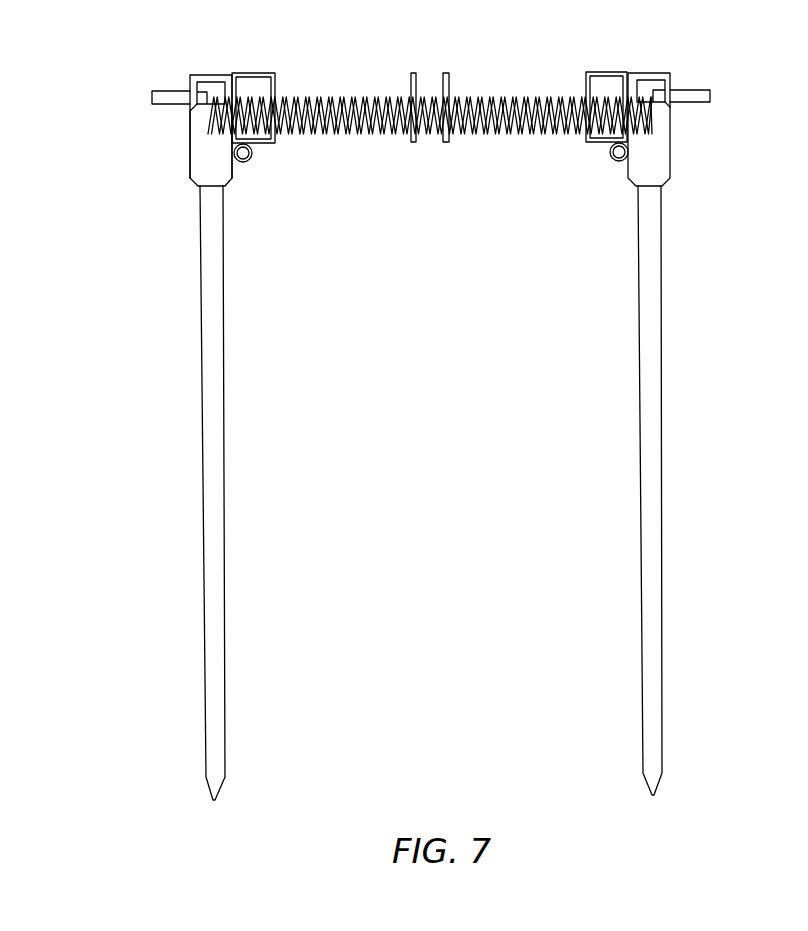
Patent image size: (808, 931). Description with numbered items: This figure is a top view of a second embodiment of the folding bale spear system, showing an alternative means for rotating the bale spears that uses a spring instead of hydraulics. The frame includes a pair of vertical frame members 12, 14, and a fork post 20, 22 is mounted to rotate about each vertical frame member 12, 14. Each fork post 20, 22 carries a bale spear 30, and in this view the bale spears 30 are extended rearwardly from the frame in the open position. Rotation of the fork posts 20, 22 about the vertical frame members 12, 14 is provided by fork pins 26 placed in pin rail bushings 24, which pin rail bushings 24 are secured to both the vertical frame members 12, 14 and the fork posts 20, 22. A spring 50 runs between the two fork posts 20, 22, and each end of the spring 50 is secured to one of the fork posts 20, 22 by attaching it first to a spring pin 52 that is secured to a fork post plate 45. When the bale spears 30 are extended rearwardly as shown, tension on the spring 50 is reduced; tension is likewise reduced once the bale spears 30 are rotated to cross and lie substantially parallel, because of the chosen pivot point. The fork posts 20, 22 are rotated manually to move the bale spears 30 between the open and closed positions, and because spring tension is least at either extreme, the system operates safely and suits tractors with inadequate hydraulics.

The vertical frame member 12 is at (583, 140).
The vertical frame member 14 is at (276, 75).
The fork post 20 is at (675, 165).
The fork post 22 is at (187, 157).
The pin rail bushing 24 is at (608, 158).
The fork pin 26 is at (235, 165).
The bale spear 30 is at (223, 370).
The fork post plate 45 is at (213, 147).
The spring 50 is at (337, 135).
The spring pin 52 is at (213, 102).